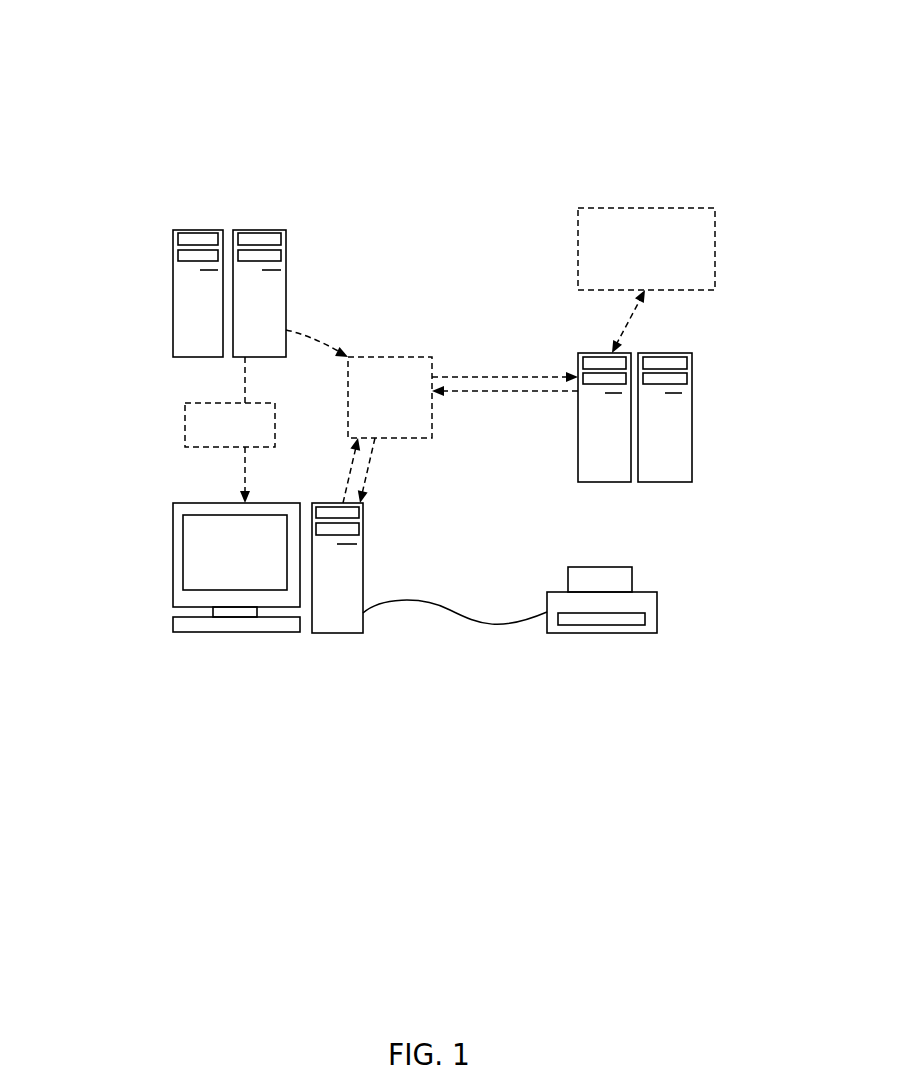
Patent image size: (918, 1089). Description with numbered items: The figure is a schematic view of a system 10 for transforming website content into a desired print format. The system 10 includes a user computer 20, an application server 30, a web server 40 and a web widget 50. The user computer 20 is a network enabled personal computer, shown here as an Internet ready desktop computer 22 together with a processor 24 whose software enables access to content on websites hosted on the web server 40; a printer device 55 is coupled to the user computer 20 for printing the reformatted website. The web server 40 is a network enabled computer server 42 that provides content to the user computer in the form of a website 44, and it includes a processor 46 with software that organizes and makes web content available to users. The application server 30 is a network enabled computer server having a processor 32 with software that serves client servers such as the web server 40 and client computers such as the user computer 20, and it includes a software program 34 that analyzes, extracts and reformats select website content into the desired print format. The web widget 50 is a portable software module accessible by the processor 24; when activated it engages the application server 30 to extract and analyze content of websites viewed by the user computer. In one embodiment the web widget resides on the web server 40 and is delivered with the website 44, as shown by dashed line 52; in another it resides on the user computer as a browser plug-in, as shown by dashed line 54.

The system for transforming website content into a desired print format 10 is at (206, 79).
The user computer 20 is at (249, 707).
The desktop computer 22 is at (173, 558).
The processor 24 is at (363, 582).
The application server 30 is at (754, 320).
The processor 32 is at (680, 428).
The software program 34 is at (645, 208).
The web server 40 is at (115, 202).
The network enabled computer server 42 is at (198, 230).
The website 44 is at (182, 423).
The processor 46 is at (268, 230).
The web widget 50 is at (410, 325).
The dashed line 52 is at (318, 340).
The dashed line 54 is at (372, 460).
The printer device 55 is at (600, 633).